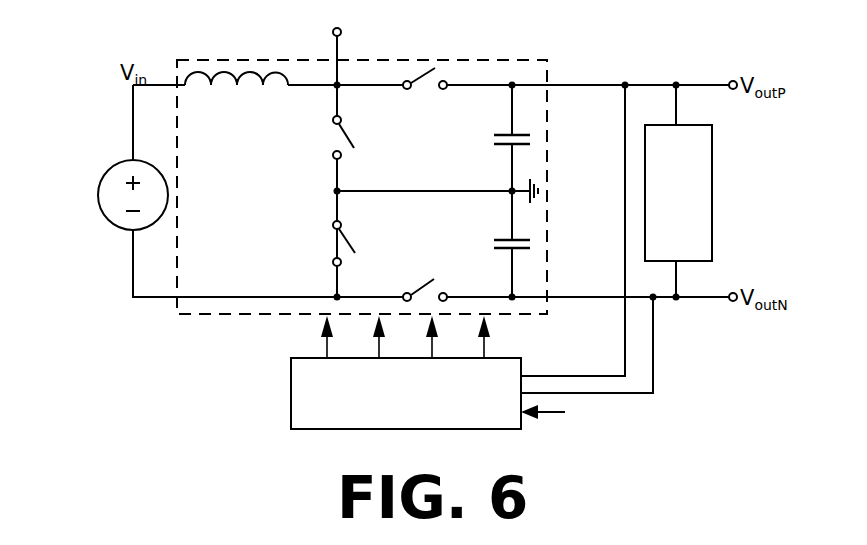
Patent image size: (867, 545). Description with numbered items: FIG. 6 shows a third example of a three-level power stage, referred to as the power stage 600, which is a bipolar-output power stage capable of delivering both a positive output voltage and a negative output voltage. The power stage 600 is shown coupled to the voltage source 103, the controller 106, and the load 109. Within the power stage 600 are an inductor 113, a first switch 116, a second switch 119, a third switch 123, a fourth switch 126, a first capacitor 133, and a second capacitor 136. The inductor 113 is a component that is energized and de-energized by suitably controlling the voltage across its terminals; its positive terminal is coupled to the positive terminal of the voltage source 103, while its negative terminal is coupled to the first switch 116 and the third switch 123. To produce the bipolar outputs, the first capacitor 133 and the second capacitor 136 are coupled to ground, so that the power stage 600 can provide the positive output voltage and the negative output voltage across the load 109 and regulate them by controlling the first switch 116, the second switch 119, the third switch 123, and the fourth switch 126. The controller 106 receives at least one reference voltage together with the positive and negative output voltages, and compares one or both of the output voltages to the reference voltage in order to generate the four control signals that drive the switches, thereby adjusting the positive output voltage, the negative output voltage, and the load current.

The voltage source 103 is at (98, 190).
The inductor 113 is at (275, 68).
The first switch 116 is at (345, 140).
The second switch 119 is at (345, 246).
The third switch 123 is at (423, 74).
The fourth switch 126 is at (432, 279).
The first capacitor 133 is at (521, 134).
The second capacitor 136 is at (521, 240).
The load 109 is at (662, 204).
The controller 106 is at (468, 404).
The power stage 600 is at (303, 316).